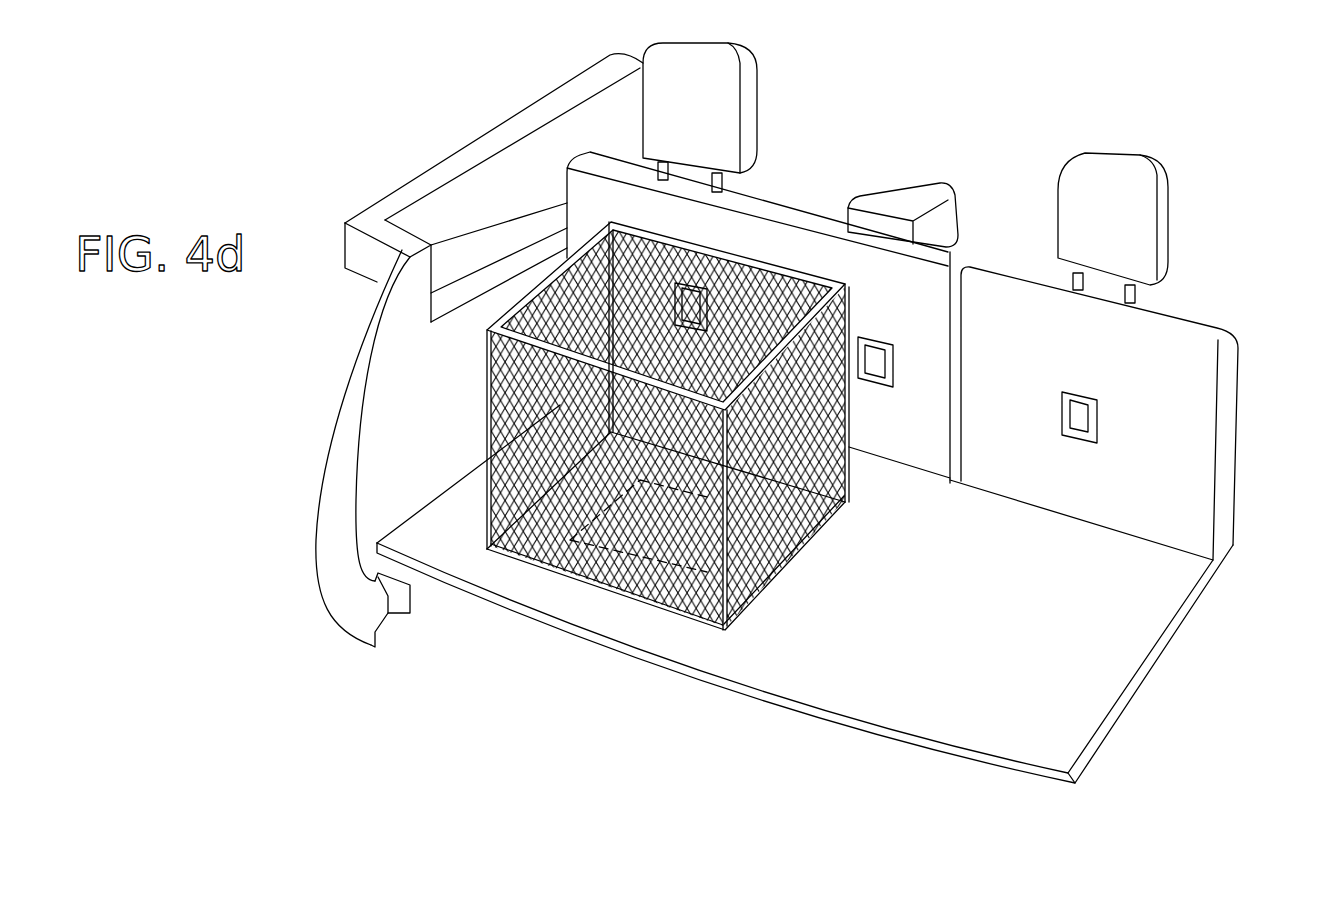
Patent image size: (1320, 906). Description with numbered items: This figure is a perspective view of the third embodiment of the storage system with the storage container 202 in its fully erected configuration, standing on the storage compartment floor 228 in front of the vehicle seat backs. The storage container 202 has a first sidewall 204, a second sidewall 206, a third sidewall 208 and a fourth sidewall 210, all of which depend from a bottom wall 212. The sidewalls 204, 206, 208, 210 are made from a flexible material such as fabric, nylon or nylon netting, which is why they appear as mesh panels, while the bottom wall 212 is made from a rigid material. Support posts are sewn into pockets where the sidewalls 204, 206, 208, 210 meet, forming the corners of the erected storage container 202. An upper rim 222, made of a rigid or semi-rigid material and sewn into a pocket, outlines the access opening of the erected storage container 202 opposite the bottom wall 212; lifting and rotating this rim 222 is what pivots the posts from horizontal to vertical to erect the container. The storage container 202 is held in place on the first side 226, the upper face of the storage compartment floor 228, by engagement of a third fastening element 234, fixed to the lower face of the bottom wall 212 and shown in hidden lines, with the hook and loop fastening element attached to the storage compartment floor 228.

The storage container 202 is at (788, 203).
The first sidewall 204 is at (635, 382).
The second sidewall 206 is at (722, 272).
The third sidewall 208 is at (848, 328).
The fourth sidewall 210 is at (550, 448).
The bottom wall 212 is at (687, 618).
The upper rim 222 is at (792, 277).
The first side 226 is at (1063, 653).
The storage compartment floor 228 is at (1140, 683).
The third fastening element 234 is at (630, 590).